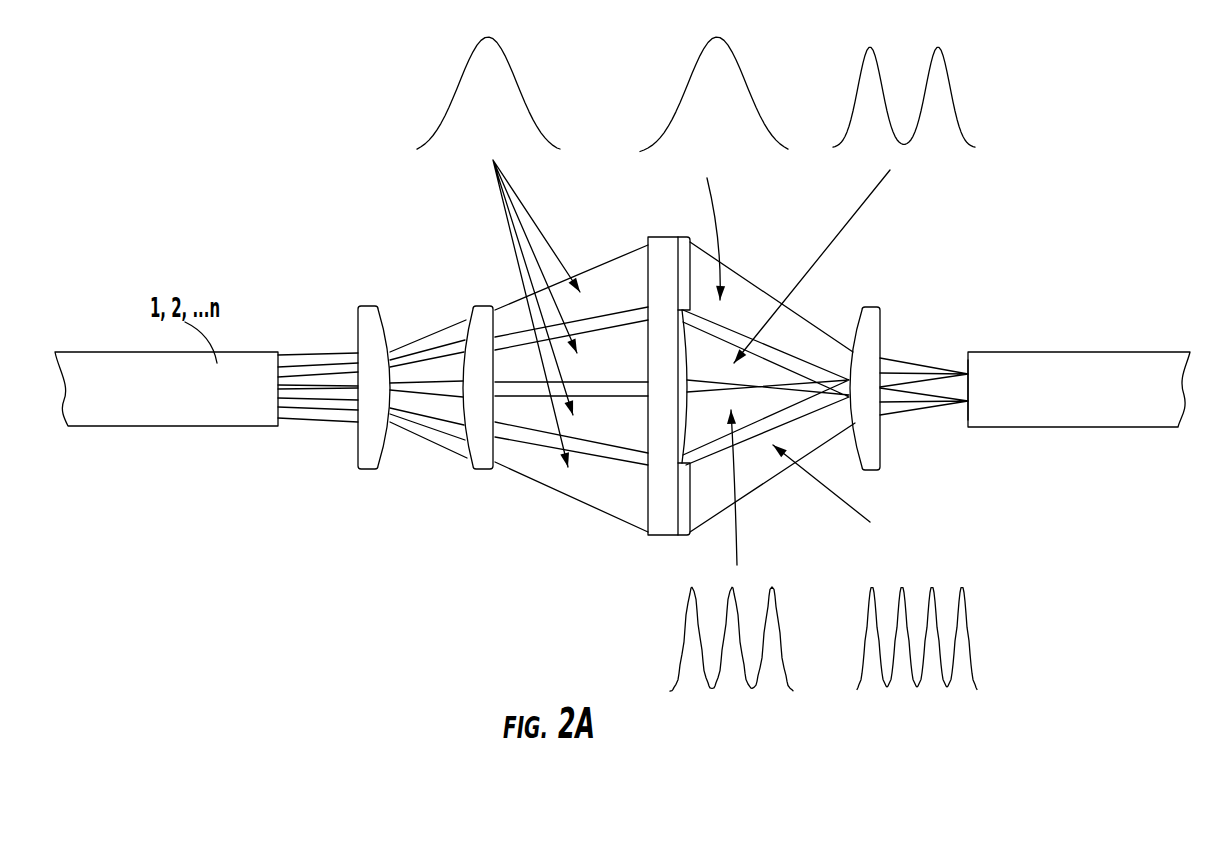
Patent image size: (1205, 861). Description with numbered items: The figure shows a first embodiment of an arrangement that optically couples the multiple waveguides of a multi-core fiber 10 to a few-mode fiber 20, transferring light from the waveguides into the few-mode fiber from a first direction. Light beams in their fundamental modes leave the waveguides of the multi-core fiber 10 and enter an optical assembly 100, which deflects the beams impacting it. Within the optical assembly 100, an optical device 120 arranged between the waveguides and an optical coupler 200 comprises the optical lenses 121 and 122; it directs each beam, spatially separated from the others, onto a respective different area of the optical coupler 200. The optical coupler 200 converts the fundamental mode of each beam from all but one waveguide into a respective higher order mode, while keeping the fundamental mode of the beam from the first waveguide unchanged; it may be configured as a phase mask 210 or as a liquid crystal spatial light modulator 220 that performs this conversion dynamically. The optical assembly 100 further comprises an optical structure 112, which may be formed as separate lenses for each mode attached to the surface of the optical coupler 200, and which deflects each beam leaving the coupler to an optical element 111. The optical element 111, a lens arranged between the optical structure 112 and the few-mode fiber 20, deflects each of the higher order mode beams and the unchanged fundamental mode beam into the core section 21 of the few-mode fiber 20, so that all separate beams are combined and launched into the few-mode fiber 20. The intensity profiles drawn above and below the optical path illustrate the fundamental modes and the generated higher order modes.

The multi-core fiber 10 is at (166, 415).
The few-mode fiber 20 is at (1068, 352).
The core section 21 is at (998, 390).
The optical assembly 100 is at (473, 305).
The optical element 111 is at (870, 447).
The optical structure 112 is at (685, 498).
The optical device 120 is at (473, 460).
The optical lens 121 is at (358, 452).
The optical lens 122 is at (485, 458).
The optical coupler 200 is at (670, 237).
The phase mask 210 is at (657, 535).
The liquid crystal spatial light modulator 220 is at (663, 386).